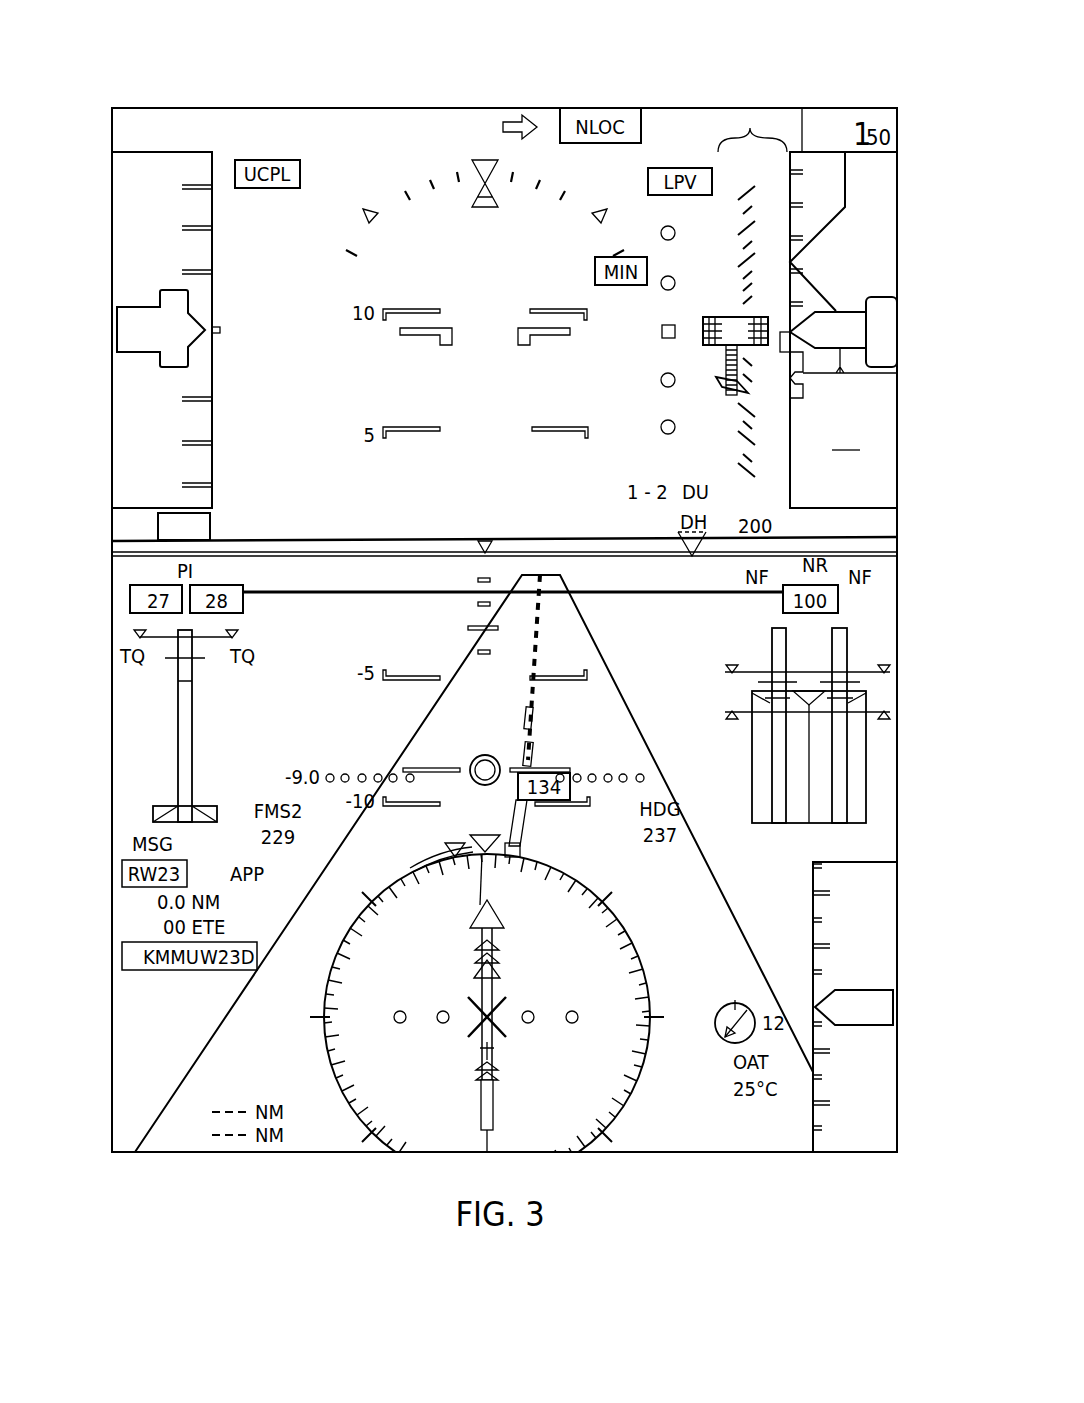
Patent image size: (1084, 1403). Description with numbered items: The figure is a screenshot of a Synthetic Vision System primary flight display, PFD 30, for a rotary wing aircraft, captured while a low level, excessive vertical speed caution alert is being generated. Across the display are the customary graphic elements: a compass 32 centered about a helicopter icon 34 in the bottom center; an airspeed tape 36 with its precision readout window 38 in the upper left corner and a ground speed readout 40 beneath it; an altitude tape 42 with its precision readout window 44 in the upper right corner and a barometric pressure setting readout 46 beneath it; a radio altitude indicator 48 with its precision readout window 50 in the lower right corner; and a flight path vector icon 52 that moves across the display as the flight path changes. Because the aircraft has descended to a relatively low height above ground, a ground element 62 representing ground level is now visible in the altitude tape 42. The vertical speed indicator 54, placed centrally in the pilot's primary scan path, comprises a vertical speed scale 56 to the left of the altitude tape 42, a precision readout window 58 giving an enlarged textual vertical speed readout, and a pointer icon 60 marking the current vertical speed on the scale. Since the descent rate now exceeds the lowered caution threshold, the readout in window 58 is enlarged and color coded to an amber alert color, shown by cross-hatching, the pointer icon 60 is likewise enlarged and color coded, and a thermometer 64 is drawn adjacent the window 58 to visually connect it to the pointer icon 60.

The primary flight display 30 is at (175, 100).
The compass 32 is at (614, 912).
The helicopter icon 34 is at (498, 1000).
The airspeed tape 36 is at (212, 259).
The precision readout window 38 is at (133, 318).
The ground speed readout 40 is at (212, 528).
The altitude tape 42 is at (897, 212).
The precision readout window 44 is at (897, 333).
The barometric pressure setting readout 46 is at (872, 527).
The radio altitude indicator 48 is at (813, 910).
The precision readout window 50 is at (893, 1008).
The flight path vector icon 52 is at (488, 770).
The vertical speed indicator 54 is at (745, 128).
The vertical speed scale 56 is at (750, 186).
The precision readout window 58 is at (718, 317).
The pointer icon 60 is at (723, 388).
The ground element 62 is at (846, 438).
The thermometer 64 is at (726, 366).